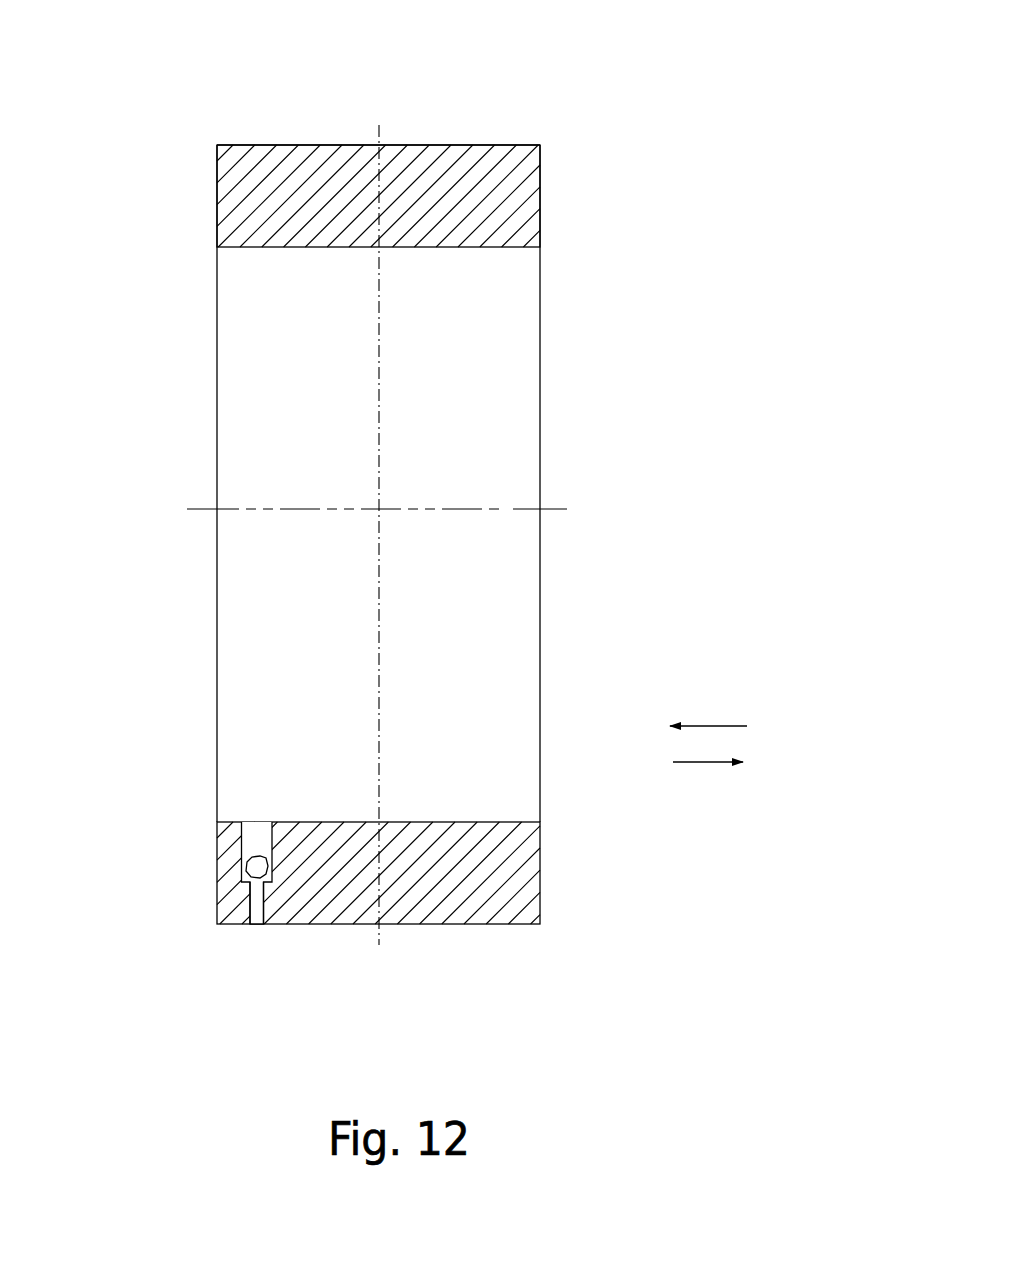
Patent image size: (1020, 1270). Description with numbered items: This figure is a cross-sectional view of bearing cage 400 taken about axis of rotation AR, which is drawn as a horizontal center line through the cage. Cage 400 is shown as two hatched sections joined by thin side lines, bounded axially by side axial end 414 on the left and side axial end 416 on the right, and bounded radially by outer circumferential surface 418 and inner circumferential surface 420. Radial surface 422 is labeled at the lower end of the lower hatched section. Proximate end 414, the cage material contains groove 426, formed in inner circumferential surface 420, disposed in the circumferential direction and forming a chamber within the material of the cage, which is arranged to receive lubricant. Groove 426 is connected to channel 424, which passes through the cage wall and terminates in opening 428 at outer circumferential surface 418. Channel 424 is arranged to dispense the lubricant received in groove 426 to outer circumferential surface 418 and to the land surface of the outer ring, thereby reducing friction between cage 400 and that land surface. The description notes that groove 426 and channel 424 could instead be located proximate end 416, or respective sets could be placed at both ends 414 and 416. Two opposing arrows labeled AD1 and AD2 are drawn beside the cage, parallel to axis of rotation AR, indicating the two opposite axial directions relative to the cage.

The bearing cage 400 is at (602, 107).
The side axial end 414 is at (217, 197).
The side axial end 416 is at (542, 176).
The outer circumferential surface 418 is at (492, 145).
The inner circumferential surface 420 is at (277, 228).
The radial surface 422 is at (217, 908).
The channel 424 is at (257, 913).
The groove 426 is at (253, 832).
The opening 428 is at (262, 923).
The axis of rotation AR is at (207, 508).
The first axial direction AD1 is at (716, 725).
The second axial direction AD2 is at (697, 763).